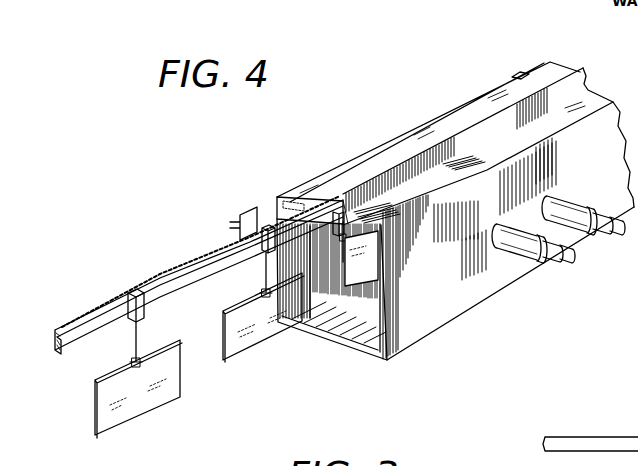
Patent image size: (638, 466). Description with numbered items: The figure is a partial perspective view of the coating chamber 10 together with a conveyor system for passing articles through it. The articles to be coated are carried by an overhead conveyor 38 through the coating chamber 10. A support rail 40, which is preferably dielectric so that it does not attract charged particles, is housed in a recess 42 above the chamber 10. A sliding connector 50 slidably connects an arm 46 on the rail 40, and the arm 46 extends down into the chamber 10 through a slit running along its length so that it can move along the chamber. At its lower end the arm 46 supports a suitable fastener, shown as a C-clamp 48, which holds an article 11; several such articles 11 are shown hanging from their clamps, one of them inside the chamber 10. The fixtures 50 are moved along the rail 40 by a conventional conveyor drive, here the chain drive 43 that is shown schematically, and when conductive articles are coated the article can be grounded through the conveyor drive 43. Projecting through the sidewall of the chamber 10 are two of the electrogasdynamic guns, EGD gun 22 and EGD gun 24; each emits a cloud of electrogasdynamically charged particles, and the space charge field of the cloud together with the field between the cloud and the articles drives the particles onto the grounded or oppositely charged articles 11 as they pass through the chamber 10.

In FIG. 4, the coating chamber 10 is at (497, 297).
In FIG. 3, the coating chamber 10 is at (622, 434).
In FIG. 4, the article 11 is at (104, 425).
In FIG. 4, the EGD gun 22 is at (544, 262).
In FIG. 4, the EGD gun 24 is at (606, 234).
In FIG. 4, the overhead conveyor 38 is at (174, 269).
In FIG. 4, the support rail 40 is at (215, 252).
In FIG. 4, the recess 42 is at (318, 195).
In FIG. 4, the chain drive 43 is at (92, 312).
In FIG. 4, the arm 46 is at (141, 333).
In FIG. 4, the C-clamp 48 is at (132, 361).
In FIG. 4, the sliding connector 50 is at (136, 296).